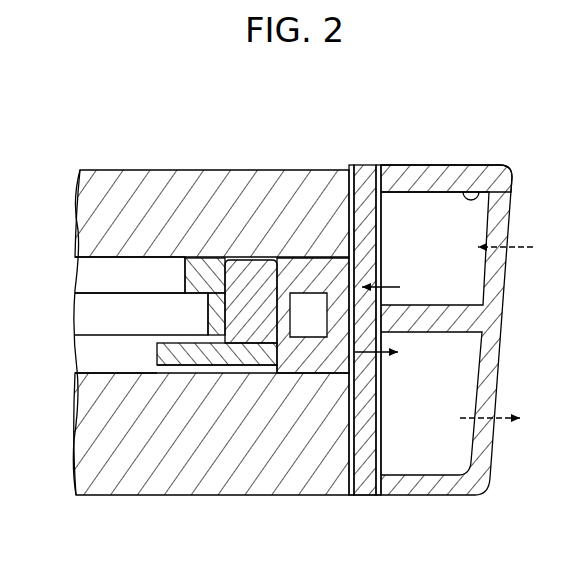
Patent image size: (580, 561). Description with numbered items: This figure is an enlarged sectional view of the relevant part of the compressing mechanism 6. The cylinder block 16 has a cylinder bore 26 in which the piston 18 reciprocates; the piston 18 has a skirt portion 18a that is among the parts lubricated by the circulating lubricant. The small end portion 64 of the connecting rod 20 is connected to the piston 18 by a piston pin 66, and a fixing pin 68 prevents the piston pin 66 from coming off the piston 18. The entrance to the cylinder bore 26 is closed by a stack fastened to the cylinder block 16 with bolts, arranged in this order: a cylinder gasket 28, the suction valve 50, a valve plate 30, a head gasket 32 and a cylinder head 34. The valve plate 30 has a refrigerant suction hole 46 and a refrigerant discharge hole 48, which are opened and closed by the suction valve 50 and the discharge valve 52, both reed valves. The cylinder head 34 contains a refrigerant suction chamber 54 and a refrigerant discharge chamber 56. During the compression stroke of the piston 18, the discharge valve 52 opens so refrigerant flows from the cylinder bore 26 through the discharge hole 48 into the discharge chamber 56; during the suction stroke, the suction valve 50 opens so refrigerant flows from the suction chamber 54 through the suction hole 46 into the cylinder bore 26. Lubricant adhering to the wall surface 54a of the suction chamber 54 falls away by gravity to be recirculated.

The compressing mechanism 6 is at (514, 191).
The cylinder block 16 is at (253, 170).
The piston 18 is at (290, 373).
The skirt portion 18a is at (203, 263).
The connecting rod 20 is at (105, 337).
The cylinder bore 26 is at (95, 272).
The cylinder gasket 28 is at (351, 180).
The valve plate 30 is at (365, 180).
The head gasket 32 is at (379, 178).
The cylinder head 34 is at (440, 170).
The refrigerant suction hole 46 is at (400, 283).
The refrigerant discharge hole 48 is at (380, 367).
The suction valve 50 is at (340, 258).
The discharge valve 52 is at (378, 372).
The refrigerant suction chamber 54 is at (478, 235).
The wall surface 54a is at (480, 188).
The refrigerant discharge chamber 56 is at (470, 408).
The small end portion 64 is at (227, 262).
The piston pin 66 is at (252, 373).
The fixing pin 68 is at (170, 347).